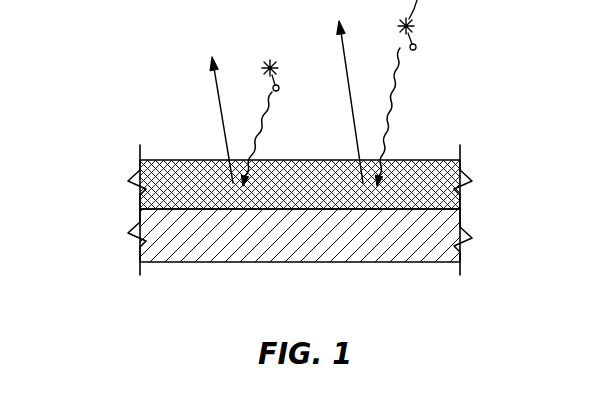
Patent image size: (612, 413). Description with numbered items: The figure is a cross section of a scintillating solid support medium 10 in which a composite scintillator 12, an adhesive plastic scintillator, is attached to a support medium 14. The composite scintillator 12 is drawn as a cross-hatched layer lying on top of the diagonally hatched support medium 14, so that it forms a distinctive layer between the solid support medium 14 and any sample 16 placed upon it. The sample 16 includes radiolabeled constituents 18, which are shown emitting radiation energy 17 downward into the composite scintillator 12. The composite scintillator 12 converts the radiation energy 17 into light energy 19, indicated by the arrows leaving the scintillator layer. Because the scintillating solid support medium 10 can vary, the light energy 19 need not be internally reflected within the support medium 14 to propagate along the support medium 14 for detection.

The scintillating solid support medium 10 is at (108, 158).
The composite scintillator 12 is at (431, 160).
The support medium 14 is at (368, 250).
The sample 16 is at (198, 82).
The radiation energy 17 is at (397, 82).
The radiolabeled constituents 18 is at (272, 60).
The light energy 19 is at (351, 103).